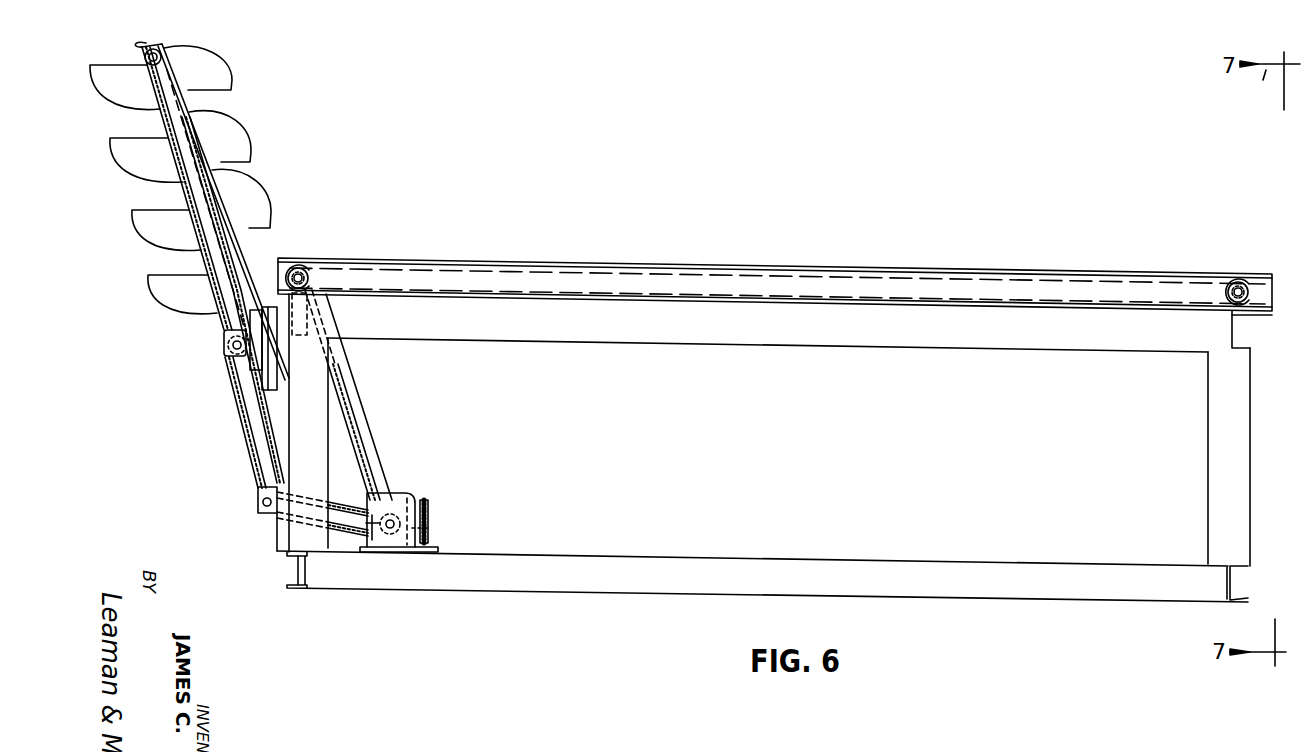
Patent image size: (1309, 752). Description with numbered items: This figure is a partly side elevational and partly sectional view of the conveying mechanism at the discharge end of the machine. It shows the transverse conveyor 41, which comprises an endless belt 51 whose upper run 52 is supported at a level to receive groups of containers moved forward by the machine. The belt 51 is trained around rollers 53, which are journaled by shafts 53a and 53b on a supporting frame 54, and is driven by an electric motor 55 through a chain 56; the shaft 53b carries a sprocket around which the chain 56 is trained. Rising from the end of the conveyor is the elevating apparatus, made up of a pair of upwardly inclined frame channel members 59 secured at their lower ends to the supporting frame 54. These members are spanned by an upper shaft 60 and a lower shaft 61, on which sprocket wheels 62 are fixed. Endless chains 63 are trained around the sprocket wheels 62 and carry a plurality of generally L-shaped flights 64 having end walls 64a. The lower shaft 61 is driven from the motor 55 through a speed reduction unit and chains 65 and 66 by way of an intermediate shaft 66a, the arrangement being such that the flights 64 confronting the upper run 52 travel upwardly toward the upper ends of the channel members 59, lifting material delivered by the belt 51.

The transverse conveyor 41 is at (1233, 518).
The endless belt 51 is at (798, 286).
The upper run 52 is at (1032, 272).
The rollers 53 is at (306, 282).
The shaft 53a is at (1236, 287).
The shaft 53b is at (296, 276).
The supporting frame 54 is at (413, 330).
The electric motor 55 is at (410, 496).
The chain 56 is at (355, 408).
The frame channel members 59 is at (185, 120).
The upper shaft 60 is at (146, 57).
The lower shaft 61 is at (232, 346).
The sprocket wheels 62 is at (228, 358).
The endless chains 63 is at (197, 254).
The flights 64 is at (260, 212).
The end walls 64a is at (243, 203).
The chain 65 is at (340, 535).
The chain 66 is at (240, 455).
The intermediate shaft 66a is at (262, 502).